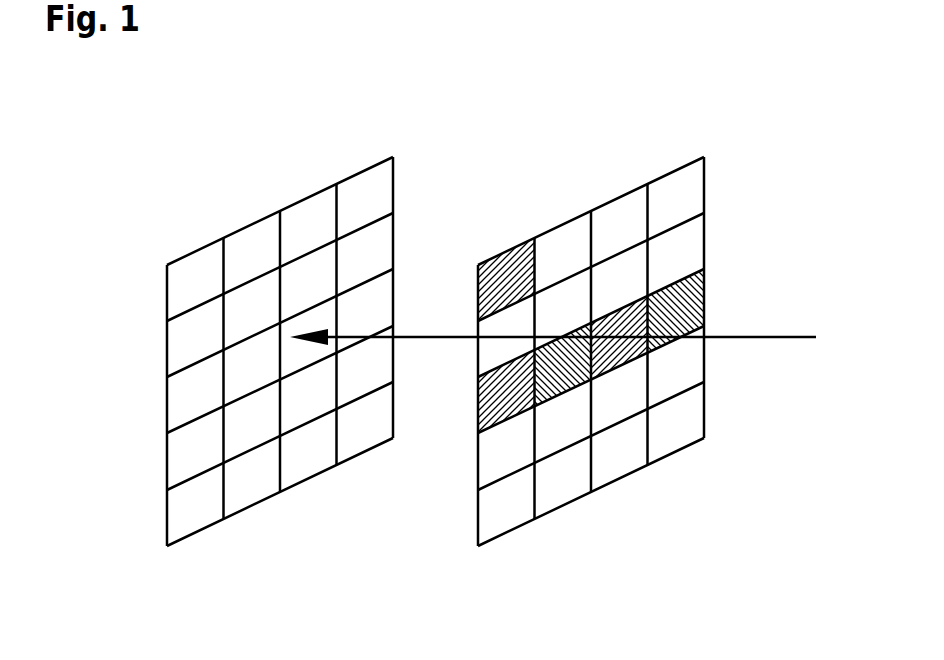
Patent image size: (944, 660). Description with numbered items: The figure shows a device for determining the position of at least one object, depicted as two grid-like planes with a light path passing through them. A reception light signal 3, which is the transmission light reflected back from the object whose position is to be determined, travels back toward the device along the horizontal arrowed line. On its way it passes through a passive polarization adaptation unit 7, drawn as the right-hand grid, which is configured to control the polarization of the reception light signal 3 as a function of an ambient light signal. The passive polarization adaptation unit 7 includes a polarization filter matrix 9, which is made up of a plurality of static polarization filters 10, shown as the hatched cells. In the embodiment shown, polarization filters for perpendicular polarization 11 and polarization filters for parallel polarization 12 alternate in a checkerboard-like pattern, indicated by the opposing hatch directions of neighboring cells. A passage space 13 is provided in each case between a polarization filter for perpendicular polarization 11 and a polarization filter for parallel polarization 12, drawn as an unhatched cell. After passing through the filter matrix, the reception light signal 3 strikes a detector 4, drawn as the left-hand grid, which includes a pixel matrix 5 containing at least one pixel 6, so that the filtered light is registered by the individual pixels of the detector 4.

The reception light signal 3 is at (800, 338).
The detector 4 is at (222, 203).
The pixel matrix 5 is at (203, 285).
The pixel 6 is at (372, 253).
The passive polarization adaptation unit 7 is at (737, 185).
The polarization filter matrix 9 is at (567, 377).
The static polarization filters 10 is at (626, 295).
The polarization filter for perpendicular polarization 11 is at (692, 302).
The polarization filter for parallel polarization 12 is at (492, 262).
The passage space 13 is at (578, 252).